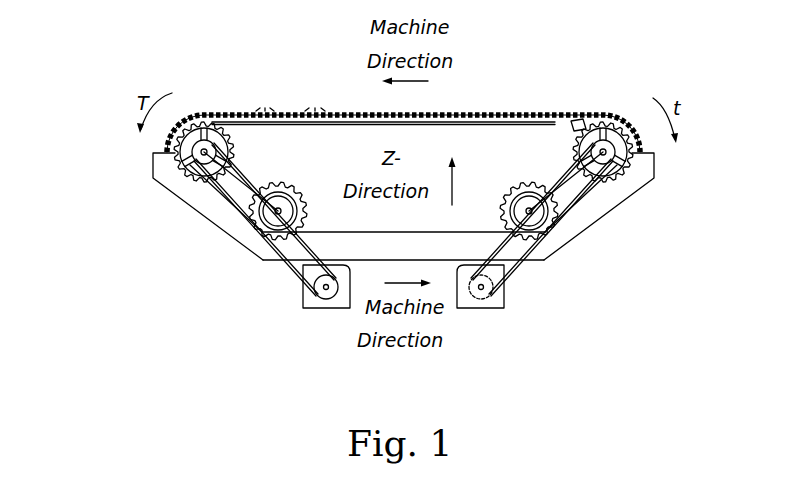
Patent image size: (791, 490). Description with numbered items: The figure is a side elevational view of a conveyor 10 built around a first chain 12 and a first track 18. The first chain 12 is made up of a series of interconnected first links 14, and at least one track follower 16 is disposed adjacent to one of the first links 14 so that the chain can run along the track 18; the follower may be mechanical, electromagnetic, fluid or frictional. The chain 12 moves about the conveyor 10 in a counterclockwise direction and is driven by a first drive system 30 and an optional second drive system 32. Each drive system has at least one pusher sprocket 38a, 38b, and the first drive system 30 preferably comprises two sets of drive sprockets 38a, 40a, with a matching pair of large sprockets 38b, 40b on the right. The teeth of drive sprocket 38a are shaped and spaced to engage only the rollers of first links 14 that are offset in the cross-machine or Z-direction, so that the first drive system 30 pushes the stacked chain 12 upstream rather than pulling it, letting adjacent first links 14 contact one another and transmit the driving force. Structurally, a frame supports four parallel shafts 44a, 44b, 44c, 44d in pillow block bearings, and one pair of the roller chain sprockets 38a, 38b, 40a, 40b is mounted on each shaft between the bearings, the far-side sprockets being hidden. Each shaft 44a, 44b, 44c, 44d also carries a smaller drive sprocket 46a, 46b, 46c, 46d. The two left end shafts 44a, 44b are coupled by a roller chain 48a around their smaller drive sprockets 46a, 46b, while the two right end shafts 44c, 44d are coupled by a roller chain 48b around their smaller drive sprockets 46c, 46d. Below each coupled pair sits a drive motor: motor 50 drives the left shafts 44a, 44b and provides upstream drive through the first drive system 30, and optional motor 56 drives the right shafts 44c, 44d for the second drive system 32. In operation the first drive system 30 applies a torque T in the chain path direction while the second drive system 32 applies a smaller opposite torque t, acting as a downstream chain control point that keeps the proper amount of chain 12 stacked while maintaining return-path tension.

The conveyor 10 is at (237, 293).
The first chain 12 is at (527, 106).
The first links 14 is at (274, 111).
The track follower 16 is at (325, 111).
The first track 18 is at (186, 214).
The first drive system 30 is at (328, 244).
The second drive system 32 is at (475, 245).
The pusher sprocket 38a is at (250, 215).
The pusher sprocket 38b is at (563, 212).
The drive sprocket 40a is at (192, 191).
The drive sprocket 40b is at (630, 150).
The shaft 44a is at (204, 140).
The shaft 44b is at (277, 214).
The shaft 44c is at (624, 121).
The shaft 44d is at (527, 226).
The smaller drive sprocket 46a is at (192, 151).
The smaller drive sprocket 46b is at (280, 218).
The smaller drive sprocket 46c is at (602, 140).
The smaller drive sprocket 46d is at (529, 215).
The roller chain 48a is at (225, 200).
The roller chain 48b is at (578, 203).
The drive motor 50 is at (338, 304).
The drive motor 56 is at (495, 303).